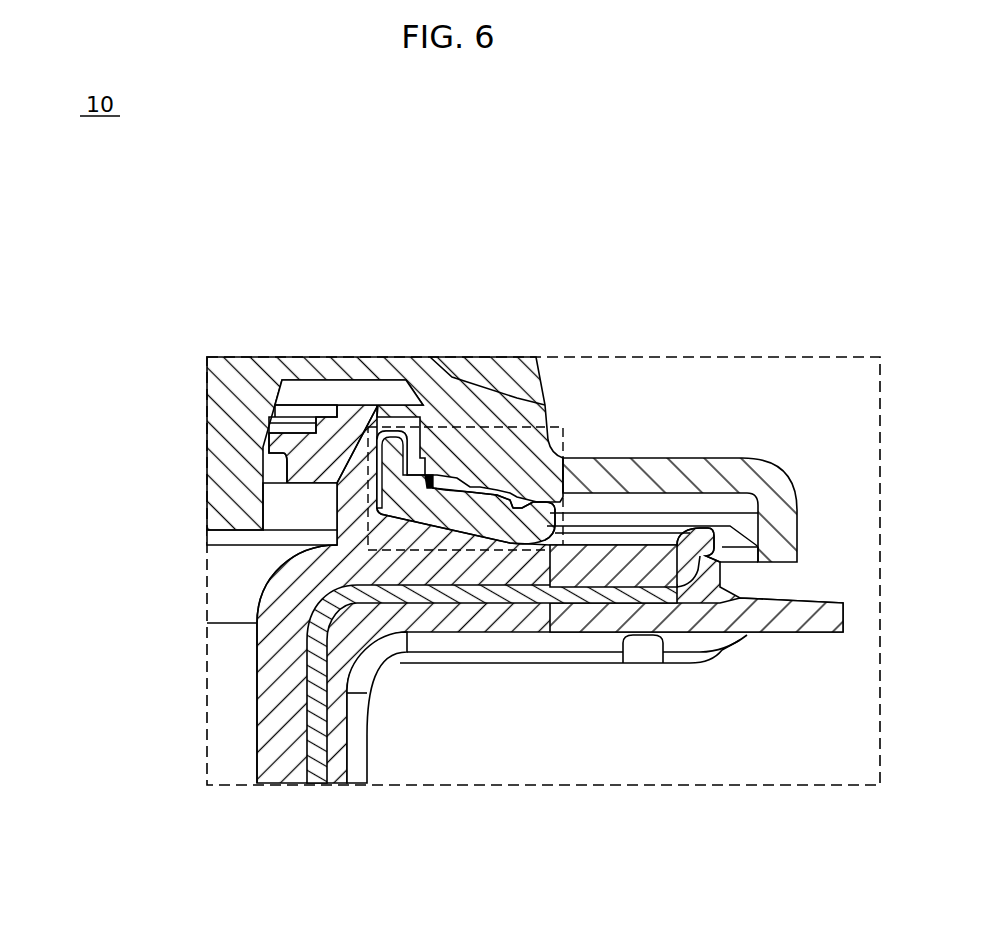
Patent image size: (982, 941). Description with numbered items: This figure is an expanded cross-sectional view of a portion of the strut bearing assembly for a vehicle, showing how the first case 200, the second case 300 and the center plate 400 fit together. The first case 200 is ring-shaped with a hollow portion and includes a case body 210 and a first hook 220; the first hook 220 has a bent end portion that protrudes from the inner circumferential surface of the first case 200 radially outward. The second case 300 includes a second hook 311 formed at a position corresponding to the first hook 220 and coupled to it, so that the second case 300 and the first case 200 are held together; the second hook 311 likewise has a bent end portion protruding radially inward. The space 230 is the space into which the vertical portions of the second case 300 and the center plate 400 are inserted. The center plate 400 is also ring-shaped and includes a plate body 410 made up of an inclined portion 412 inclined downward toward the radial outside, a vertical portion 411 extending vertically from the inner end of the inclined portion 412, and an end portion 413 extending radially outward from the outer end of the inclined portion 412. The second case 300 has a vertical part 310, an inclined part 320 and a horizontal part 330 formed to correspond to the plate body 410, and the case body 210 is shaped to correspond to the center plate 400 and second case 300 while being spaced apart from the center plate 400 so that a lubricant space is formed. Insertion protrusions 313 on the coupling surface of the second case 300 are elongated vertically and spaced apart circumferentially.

The first case 200 is at (480, 265).
The case body 210 is at (457, 392).
The first hook 220 is at (283, 470).
The space 230 is at (367, 393).
The second case 300 is at (122, 505).
The vertical part 310 is at (290, 518).
The second hook 311 is at (313, 462).
The insertion protrusion 313 is at (323, 548).
The inclined part 320 is at (455, 565).
The horizontal part 330 is at (598, 563).
The center plate 400 is at (682, 235).
The plate body 410 is at (583, 291).
The vertical portion 411 is at (395, 462).
The inclined portion 412 is at (450, 512).
The end portion 413 is at (546, 512).